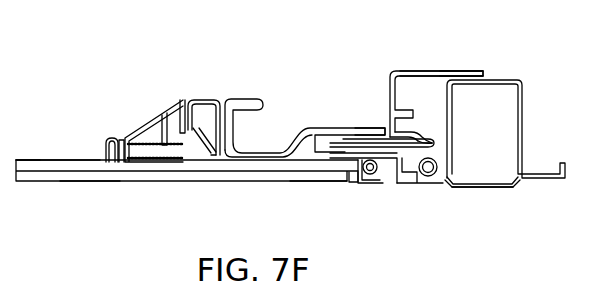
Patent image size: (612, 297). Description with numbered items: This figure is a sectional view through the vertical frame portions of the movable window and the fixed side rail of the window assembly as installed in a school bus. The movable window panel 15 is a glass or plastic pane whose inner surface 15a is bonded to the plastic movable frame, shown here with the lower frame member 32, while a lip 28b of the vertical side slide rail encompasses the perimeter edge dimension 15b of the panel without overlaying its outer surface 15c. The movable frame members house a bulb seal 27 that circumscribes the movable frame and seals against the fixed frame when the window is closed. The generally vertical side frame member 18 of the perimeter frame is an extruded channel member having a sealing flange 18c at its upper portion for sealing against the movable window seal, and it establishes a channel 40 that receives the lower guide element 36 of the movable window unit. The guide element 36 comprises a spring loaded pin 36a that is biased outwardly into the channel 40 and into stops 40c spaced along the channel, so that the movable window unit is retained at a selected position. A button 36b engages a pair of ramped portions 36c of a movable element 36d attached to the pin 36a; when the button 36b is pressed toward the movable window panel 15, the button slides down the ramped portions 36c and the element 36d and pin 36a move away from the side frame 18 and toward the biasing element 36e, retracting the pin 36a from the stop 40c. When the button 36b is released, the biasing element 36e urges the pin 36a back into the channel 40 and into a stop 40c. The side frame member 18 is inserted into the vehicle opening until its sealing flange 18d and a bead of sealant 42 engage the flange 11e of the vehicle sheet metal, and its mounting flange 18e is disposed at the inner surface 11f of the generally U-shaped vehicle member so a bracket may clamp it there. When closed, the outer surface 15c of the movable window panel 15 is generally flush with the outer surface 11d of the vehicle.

The movable window panel 15 is at (40, 183).
The inner surface of movable window panel 15a is at (32, 162).
The perimeter edge dimension of movable window panel 15b is at (320, 182).
The outer surface of movable window panel 15c is at (85, 183).
The lower frame member 32 is at (58, 162).
The lower guide element 36 is at (378, 134).
The spring loaded pin 36a is at (434, 142).
The button 36b is at (208, 100).
The ramped portions 36c is at (194, 145).
The movable element 36d is at (288, 160).
The biasing element 36e is at (151, 150).
The channel 40 is at (397, 135).
The stop 40c is at (424, 140).
The bead of sealant 42 is at (438, 166).
The bulb seal 27 is at (364, 176).
The lip 28b is at (351, 183).
The side frame member 18 is at (476, 60).
The sealing flange 18c is at (386, 184).
The sealing flange 18d is at (418, 184).
The mounting flange 18e is at (441, 70).
The outer surface of vehicle 11d is at (447, 186).
The flange of vehicle sheet metal 11e is at (437, 186).
The inner surface of vehicle sheet metal 11f is at (505, 79).